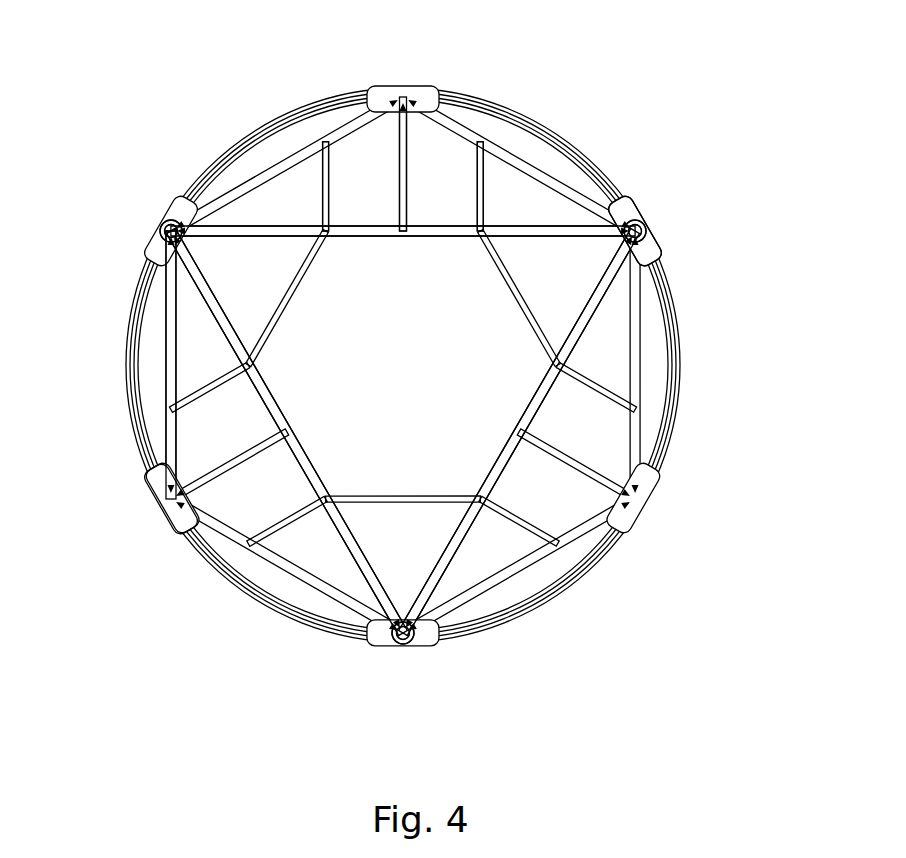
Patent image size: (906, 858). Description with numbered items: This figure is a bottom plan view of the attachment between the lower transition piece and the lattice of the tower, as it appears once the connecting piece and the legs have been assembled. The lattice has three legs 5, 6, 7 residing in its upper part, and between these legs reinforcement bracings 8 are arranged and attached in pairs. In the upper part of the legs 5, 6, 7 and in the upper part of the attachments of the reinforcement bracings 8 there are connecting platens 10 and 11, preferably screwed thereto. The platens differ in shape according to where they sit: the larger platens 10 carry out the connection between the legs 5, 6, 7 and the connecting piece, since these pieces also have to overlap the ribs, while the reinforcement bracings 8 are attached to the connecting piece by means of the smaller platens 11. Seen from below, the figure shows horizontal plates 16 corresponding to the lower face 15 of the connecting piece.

The leg 5 is at (171, 231).
The leg 6 is at (403, 633).
The leg 7 is at (650, 247).
The reinforcement bracing 8 is at (163, 373).
The connecting platen 10 is at (640, 213).
The connecting platen 11 is at (176, 502).
The lower face 15 is at (557, 280).
The horizontal plate 16 is at (440, 183).